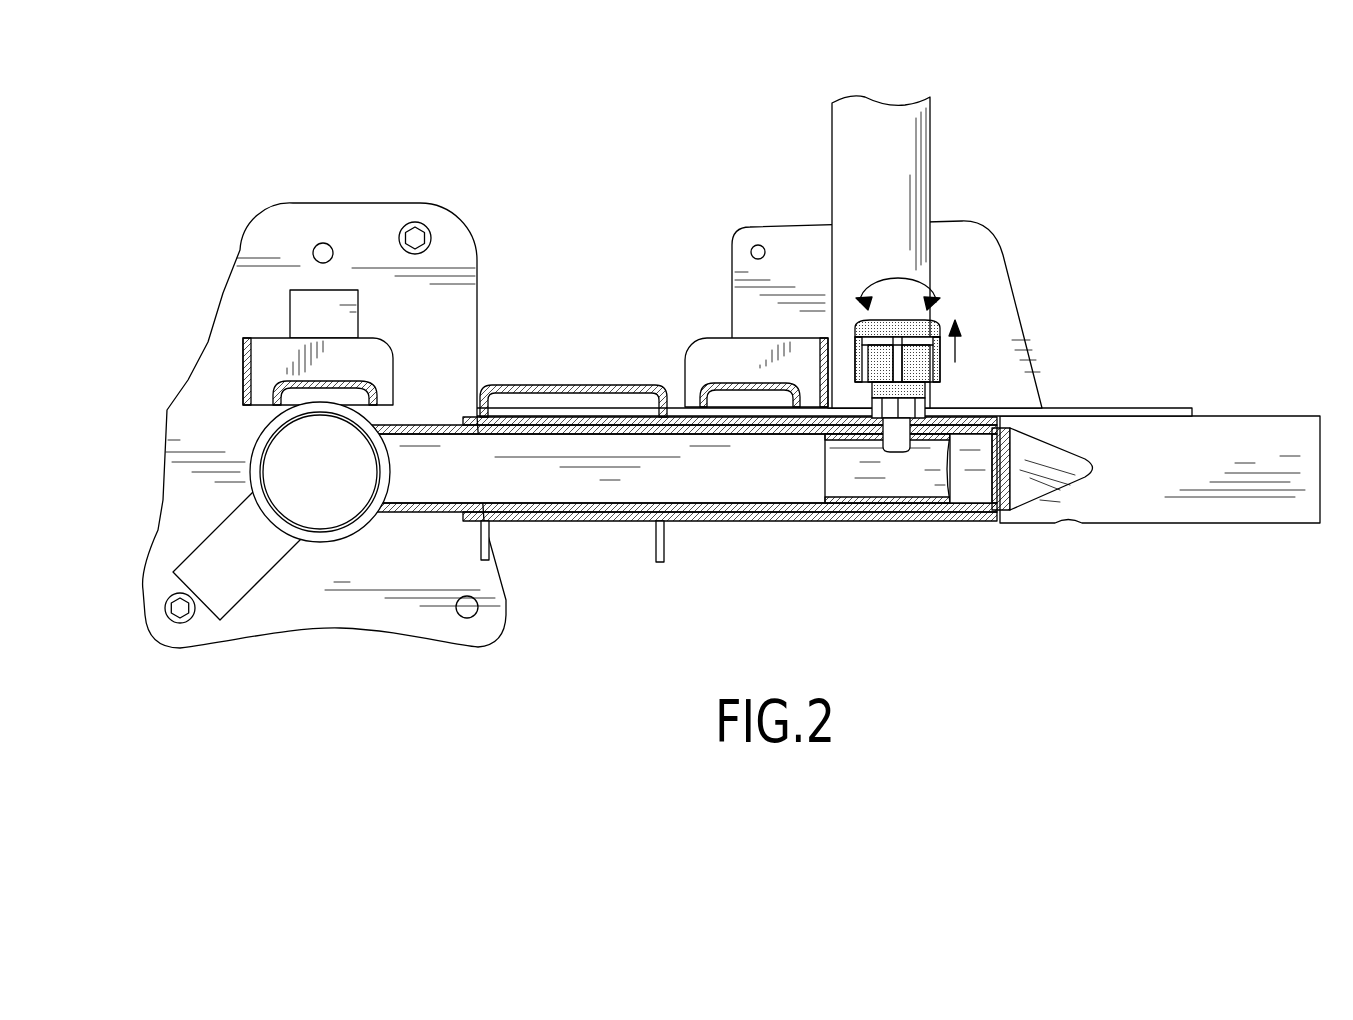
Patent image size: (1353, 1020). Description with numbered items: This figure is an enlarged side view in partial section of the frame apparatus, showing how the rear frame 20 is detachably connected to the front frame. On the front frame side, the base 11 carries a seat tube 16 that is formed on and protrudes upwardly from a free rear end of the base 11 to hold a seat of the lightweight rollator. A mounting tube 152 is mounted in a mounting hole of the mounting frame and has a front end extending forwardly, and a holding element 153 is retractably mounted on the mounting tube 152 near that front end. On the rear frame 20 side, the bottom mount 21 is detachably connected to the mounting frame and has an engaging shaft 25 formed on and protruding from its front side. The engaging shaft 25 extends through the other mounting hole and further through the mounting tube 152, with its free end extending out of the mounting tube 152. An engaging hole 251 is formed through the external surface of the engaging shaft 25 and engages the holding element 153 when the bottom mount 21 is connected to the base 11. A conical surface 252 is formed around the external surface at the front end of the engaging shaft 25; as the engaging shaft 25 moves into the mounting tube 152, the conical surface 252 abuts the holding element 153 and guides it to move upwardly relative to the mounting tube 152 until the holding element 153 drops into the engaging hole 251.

The base 11 is at (1228, 412).
The seat tube 16 is at (845, 187).
The rear frame 20 is at (254, 215).
The bottom mount 21 is at (370, 358).
The engaging shaft 25 is at (750, 504).
The mounting tube 152 is at (933, 514).
The holding element 153 is at (935, 330).
The engaging hole 251 is at (892, 435).
The conical surface 252 is at (1070, 474).